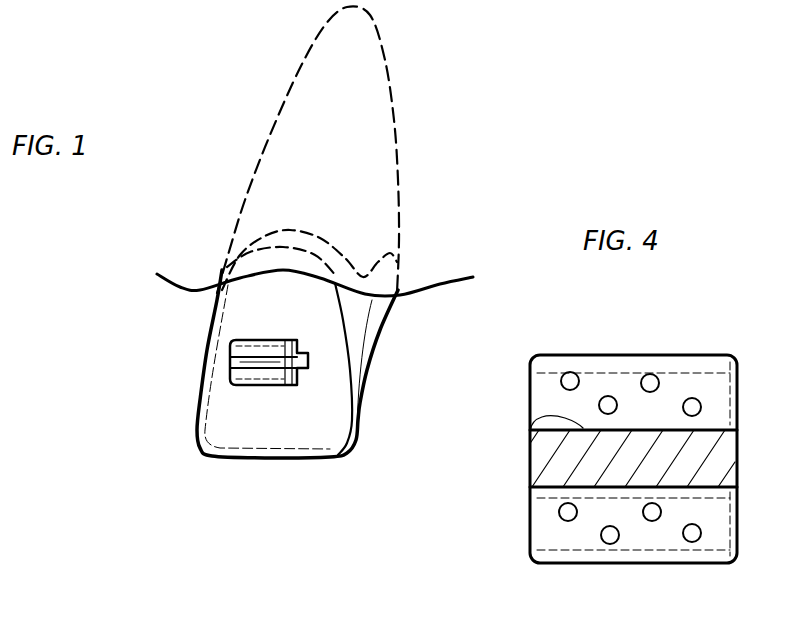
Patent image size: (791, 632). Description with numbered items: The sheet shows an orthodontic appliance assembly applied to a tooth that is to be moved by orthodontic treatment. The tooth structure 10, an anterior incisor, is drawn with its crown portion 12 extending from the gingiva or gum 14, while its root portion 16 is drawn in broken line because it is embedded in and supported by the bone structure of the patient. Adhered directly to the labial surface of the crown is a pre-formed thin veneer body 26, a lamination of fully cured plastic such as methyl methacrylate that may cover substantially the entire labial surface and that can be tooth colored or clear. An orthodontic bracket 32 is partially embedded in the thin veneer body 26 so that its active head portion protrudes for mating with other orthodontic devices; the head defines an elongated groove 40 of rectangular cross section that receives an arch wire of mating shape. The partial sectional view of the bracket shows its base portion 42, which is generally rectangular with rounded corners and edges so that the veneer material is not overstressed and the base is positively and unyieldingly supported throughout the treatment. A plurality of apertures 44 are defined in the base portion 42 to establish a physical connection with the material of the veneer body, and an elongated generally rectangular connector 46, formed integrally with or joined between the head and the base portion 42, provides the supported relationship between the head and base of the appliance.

In FIG. 1, the tooth structure 10 is at (385, 337).
In FIG. 1, the crown portion 12 is at (362, 385).
In FIG. 1, the gum line 14 is at (170, 285).
In FIG. 1, the root portion 16 is at (395, 88).
In FIG. 1, the thin veneer body 26 is at (213, 407).
In FIG. 1, the orthodontic bracket 32 is at (230, 353).
In FIG. 1, the elongated groove 40 is at (260, 363).
In FIG. 4, the base portion 42 is at (542, 517).
In FIG. 4, the apertures 44 is at (608, 405).
In FIG. 4, the connector 46 is at (528, 431).